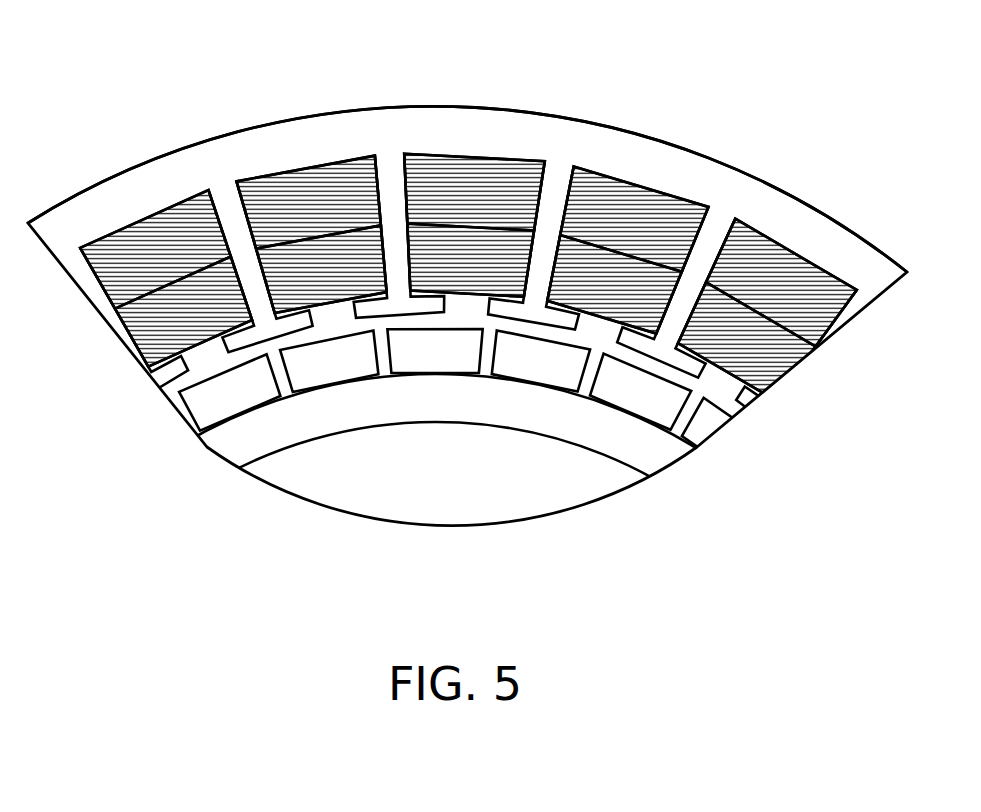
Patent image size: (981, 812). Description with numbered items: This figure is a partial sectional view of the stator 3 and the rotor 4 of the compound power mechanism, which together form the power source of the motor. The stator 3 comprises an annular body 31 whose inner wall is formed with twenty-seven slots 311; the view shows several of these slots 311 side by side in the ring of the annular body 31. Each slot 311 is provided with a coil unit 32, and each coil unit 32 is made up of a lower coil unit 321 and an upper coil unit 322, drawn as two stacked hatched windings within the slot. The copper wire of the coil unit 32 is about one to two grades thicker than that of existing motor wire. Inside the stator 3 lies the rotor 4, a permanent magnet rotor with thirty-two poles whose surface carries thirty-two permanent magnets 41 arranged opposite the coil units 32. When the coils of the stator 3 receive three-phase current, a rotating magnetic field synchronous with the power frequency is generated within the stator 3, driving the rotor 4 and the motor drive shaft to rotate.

The stator 3 is at (803, 198).
The annular body 31 is at (713, 178).
The slot 311 is at (547, 187).
The coil unit 32 is at (510, 155).
The lower coil unit 321 is at (470, 172).
The upper coil unit 322 is at (452, 245).
The rotor 4 is at (607, 460).
The permanent magnet 41 is at (240, 363).